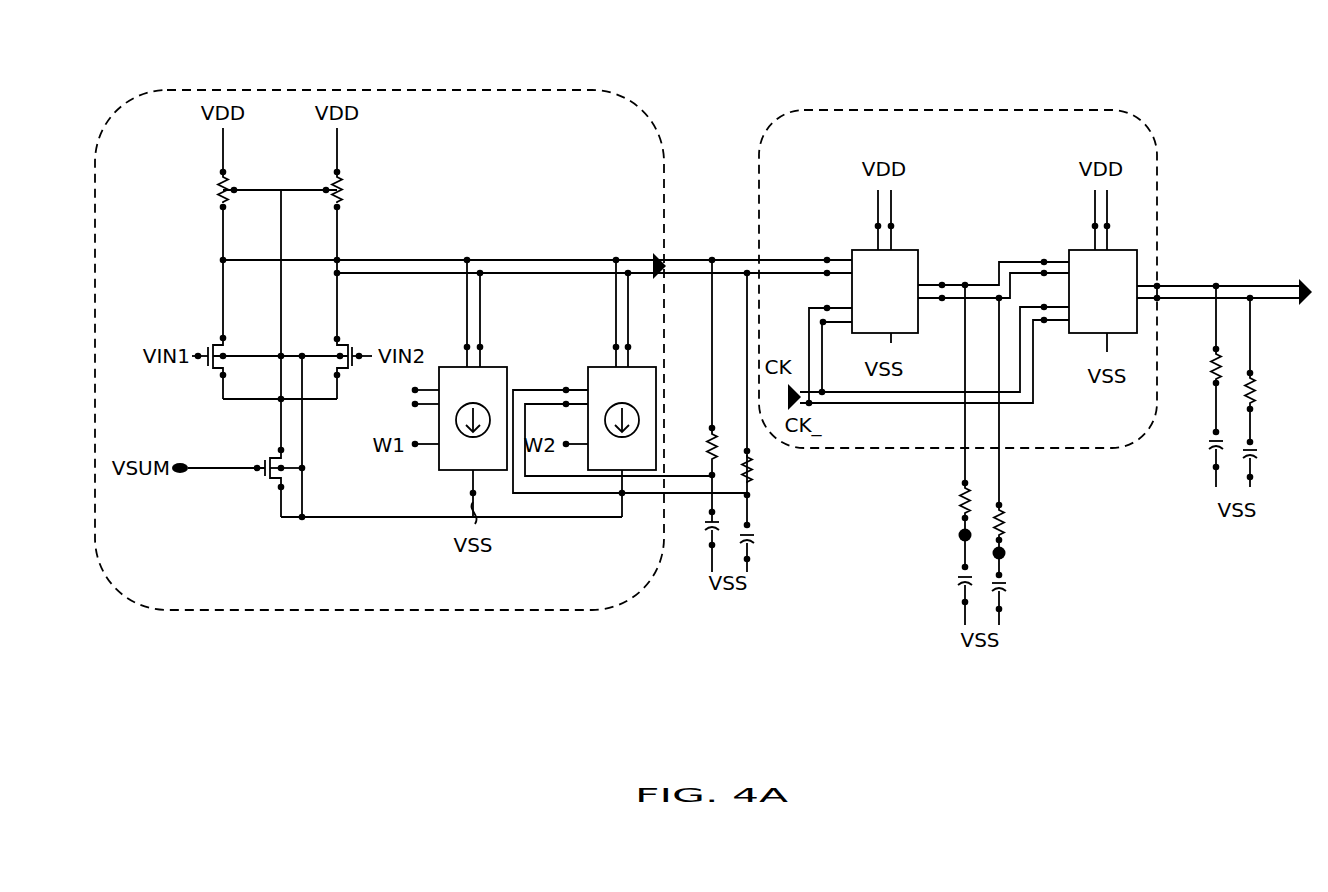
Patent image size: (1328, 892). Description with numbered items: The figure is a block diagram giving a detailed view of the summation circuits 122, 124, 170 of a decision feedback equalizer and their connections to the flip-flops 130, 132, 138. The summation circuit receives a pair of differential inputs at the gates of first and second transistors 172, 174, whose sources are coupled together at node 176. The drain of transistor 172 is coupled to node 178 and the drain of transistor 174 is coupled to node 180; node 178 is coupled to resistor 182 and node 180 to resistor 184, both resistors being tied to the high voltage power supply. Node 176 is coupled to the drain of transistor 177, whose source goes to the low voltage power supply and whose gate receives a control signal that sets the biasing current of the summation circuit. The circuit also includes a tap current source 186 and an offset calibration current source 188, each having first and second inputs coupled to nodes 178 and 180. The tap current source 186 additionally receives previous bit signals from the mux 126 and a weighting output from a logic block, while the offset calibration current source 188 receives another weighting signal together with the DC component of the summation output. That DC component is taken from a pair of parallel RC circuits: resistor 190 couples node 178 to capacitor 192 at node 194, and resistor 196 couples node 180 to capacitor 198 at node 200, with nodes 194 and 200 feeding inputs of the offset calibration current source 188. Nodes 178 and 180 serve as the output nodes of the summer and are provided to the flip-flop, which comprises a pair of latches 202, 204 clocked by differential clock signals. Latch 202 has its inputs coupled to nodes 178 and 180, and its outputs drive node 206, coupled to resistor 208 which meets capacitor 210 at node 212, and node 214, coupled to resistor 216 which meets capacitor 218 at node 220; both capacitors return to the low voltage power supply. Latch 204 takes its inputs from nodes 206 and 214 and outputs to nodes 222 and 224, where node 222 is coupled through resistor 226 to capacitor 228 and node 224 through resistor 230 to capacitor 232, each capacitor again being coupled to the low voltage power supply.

The summation circuit 122 is at (518, 90).
The summation circuit 124 is at (379, 315).
The summation circuit 170 is at (379, 315).
The flip-flop 130 is at (963, 110).
The flip-flop 132 is at (958, 241).
The flip-flop 138 is at (958, 241).
The resistor 182 is at (201, 190).
The resistor 184 is at (359, 190).
The node 178 is at (513, 260).
The node 180 is at (593, 287).
The first transistor 172 is at (230, 303).
The second transistor 174 is at (331, 303).
The node 176 is at (280, 410).
The transistor 177 is at (271, 481).
The tap current source 186 is at (447, 472).
The offset calibration current source 188 is at (588, 367).
The mux 126 is at (397, 393).
The resistor 190 is at (711, 432).
The node 194 is at (711, 475).
The capacitor 192 is at (693, 540).
The resistor 196 is at (773, 399).
The capacitor 198 is at (772, 547).
The node 200 is at (752, 495).
The latch 202 is at (918, 250).
The latch 204 is at (1069, 250).
The node 206 is at (965, 284).
The node 214 is at (999, 297).
The resistor 208 is at (940, 501).
The node 212 is at (959, 535).
The capacitor 210 is at (940, 594).
The resistor 216 is at (1021, 523).
The node 220 is at (1005, 553).
The capacitor 218 is at (1023, 598).
The node 222 is at (1216, 284).
The node 224 is at (1250, 296).
The resistor 226 is at (1196, 392).
The capacitor 228 is at (1197, 458).
The resistor 230 is at (1272, 409).
The capacitor 232 is at (1271, 463).